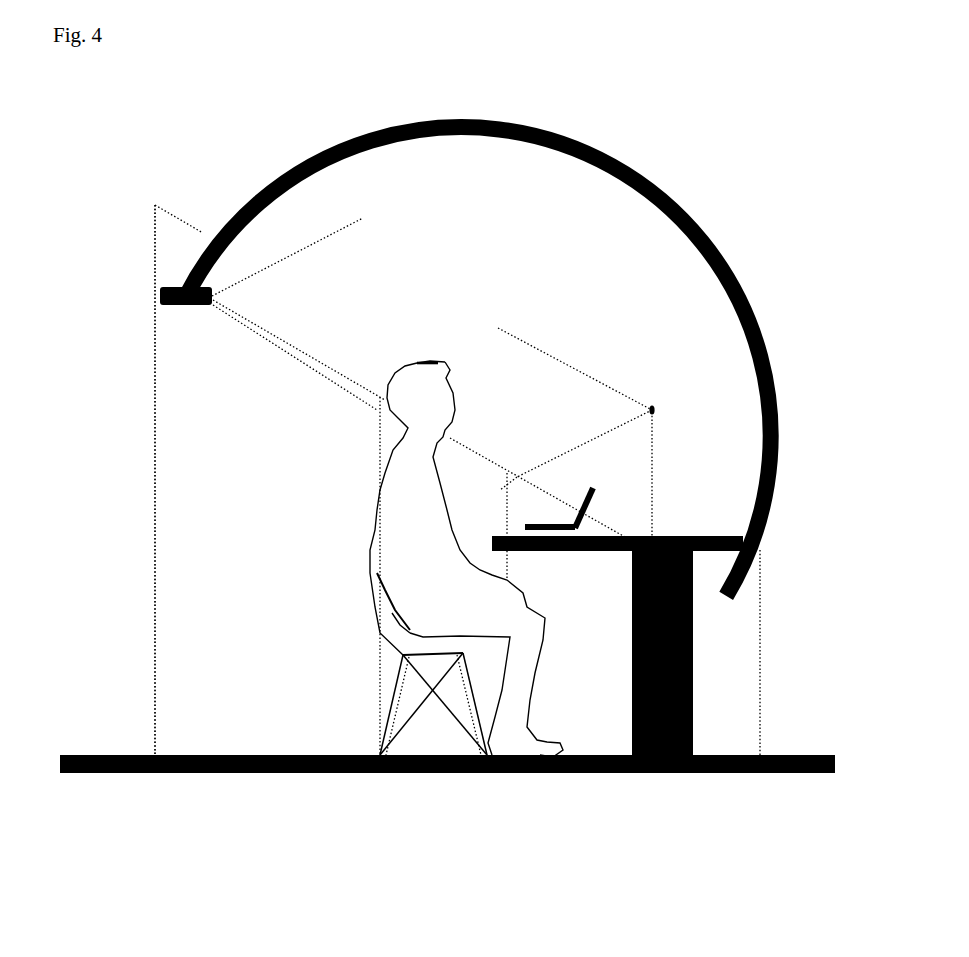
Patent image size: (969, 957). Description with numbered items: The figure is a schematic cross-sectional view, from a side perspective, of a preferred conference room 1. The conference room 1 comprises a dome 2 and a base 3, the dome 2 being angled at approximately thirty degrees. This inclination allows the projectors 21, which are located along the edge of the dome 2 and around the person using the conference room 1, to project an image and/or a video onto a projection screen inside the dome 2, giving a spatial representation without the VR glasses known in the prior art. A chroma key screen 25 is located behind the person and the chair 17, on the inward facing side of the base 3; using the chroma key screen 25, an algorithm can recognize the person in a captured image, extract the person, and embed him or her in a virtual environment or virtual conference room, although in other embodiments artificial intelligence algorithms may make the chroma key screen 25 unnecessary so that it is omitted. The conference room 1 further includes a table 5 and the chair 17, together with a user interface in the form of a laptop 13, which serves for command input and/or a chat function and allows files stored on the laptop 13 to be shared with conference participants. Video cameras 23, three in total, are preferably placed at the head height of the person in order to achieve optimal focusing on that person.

The conference room 1 is at (848, 96).
The dome 2 is at (503, 126).
The base 3 is at (155, 489).
The table 5 is at (600, 551).
The laptop 13 is at (587, 512).
The chair 17 is at (448, 690).
The projectors 21 is at (160, 297).
The video cameras 23 is at (657, 410).
The chroma key screen 25 is at (168, 654).